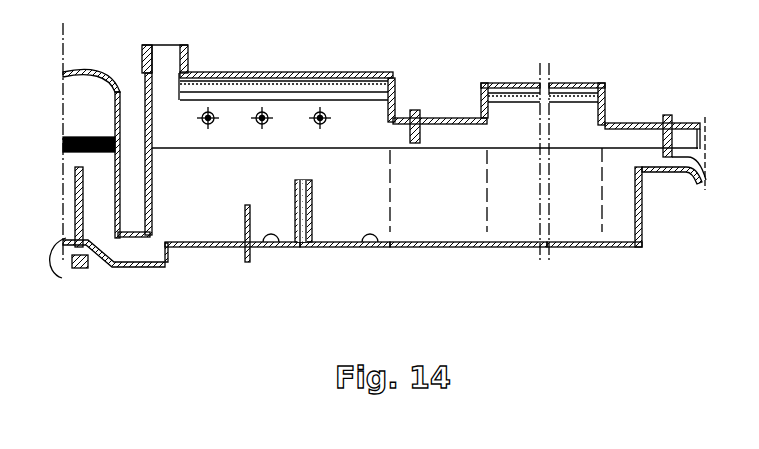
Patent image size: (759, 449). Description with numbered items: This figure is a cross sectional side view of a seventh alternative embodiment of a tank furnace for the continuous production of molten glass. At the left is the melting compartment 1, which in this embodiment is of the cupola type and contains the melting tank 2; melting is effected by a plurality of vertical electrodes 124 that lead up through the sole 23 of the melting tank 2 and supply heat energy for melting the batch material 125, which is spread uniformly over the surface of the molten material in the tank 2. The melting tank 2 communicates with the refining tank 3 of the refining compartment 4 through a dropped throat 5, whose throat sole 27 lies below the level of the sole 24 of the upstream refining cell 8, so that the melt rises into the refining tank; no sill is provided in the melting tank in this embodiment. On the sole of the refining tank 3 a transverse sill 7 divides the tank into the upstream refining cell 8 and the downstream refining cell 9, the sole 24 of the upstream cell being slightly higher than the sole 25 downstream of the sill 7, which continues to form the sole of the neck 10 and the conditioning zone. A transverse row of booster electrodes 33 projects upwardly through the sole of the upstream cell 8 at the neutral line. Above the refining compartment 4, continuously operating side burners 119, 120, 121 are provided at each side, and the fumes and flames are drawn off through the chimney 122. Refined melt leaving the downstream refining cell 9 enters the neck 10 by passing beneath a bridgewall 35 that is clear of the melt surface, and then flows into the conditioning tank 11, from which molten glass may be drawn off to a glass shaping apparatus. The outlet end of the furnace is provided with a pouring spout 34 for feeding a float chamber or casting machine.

The melting compartment 1 is at (95, 62).
The melting tank 2 is at (108, 204).
The refining tank 3 is at (268, 211).
The refining compartment 4 is at (401, 66).
The throat 5 is at (140, 260).
The transverse sill 7 is at (305, 193).
The upstream refining cell 8 is at (212, 203).
The downstream refining cell 9 is at (360, 203).
The neck 10 is at (450, 200).
The conditioning tank 11 is at (590, 200).
The sole of the melting tank 23 is at (64, 273).
The sole of the upstream refining cell 24 is at (281, 249).
The sole of the refining tank downstream of the sill 25 is at (378, 249).
The throat sole 27 is at (153, 268).
The booster electrodes 33 is at (251, 225).
The pouring spout 34 is at (685, 181).
The bridgewall 35 is at (418, 111).
The side burner 119 is at (201, 122).
The side burner 120 is at (256, 123).
The side burner 121 is at (314, 123).
The chimney 122 is at (176, 52).
The vertical electrodes 124 is at (87, 266).
The batch material 125 is at (74, 138).